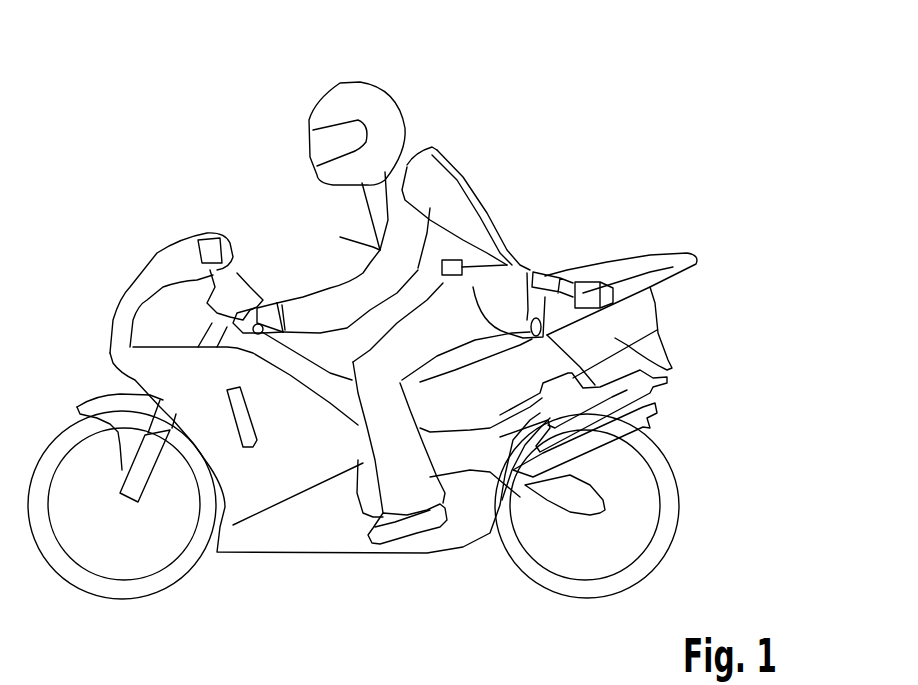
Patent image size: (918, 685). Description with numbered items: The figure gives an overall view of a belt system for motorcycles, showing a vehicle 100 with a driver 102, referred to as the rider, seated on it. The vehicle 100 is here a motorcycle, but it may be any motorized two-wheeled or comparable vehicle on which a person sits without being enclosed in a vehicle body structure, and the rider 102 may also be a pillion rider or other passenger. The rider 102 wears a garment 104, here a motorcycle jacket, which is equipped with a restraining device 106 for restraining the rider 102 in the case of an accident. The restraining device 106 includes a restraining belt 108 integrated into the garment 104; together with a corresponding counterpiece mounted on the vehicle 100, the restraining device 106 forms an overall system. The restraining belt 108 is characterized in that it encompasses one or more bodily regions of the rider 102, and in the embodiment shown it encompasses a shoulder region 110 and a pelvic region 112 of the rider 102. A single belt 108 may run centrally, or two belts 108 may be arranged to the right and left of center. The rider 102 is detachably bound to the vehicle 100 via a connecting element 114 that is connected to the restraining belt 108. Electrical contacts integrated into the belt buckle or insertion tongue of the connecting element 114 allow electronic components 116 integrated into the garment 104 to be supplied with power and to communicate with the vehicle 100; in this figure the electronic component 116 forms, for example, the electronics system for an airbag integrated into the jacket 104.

The vehicle 100 is at (665, 237).
The driver 102 is at (447, 67).
The garment 104 is at (402, 222).
The restraining device 106 is at (472, 188).
The restraining belt 108 is at (472, 248).
The shoulder region 110 is at (433, 148).
The pelvic region 112 is at (610, 327).
The connecting element 114 is at (520, 272).
The electronic components 116 is at (442, 268).